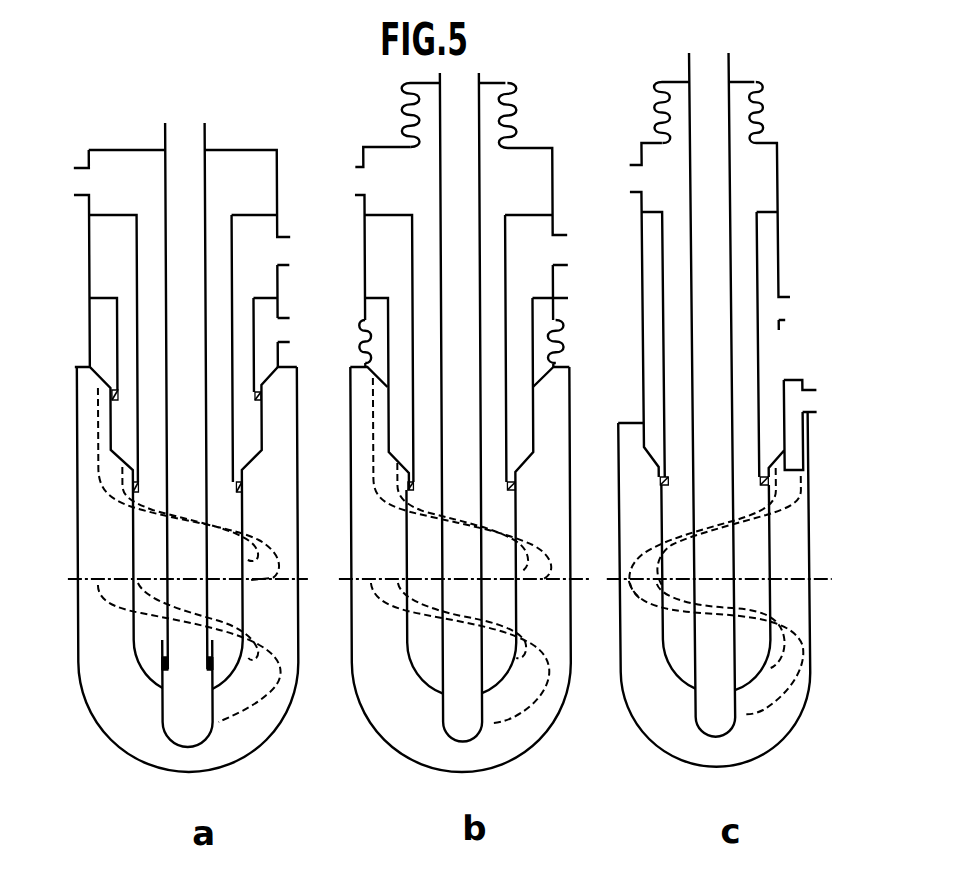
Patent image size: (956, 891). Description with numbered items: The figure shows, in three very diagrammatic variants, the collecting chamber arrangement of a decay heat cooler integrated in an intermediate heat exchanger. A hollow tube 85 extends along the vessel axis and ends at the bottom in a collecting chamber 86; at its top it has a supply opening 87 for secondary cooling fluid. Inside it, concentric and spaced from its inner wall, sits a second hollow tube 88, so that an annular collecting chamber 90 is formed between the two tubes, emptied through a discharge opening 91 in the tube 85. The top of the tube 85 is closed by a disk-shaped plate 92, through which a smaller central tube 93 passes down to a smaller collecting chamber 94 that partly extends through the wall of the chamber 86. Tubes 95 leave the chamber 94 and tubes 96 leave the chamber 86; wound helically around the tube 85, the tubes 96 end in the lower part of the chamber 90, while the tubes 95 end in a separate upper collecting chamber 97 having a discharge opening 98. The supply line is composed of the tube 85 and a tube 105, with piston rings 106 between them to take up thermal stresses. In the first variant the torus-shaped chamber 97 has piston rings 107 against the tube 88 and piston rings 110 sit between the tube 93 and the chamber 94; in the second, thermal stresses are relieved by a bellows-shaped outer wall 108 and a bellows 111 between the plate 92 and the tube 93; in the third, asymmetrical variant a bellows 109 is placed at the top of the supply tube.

The hollow tube 85 is at (138, 285).
The collecting chamber 86 is at (157, 668).
The supply opening 87 is at (85, 182).
The second hollow tube 88 is at (118, 318).
The collecting chamber 90 is at (255, 228).
The discharge opening 91 is at (283, 252).
The disk-shaped plate 92 is at (257, 150).
The tube 93 is at (205, 168).
The collecting chamber 94 is at (203, 732).
The tubes 95 is at (237, 712).
The tubes 96 is at (252, 658).
The collecting chamber 97 is at (100, 348).
The discharge opening 98 is at (285, 327).
The tube 105 is at (242, 617).
The piston rings 106 is at (242, 487).
The piston rings 107 is at (260, 396).
The bellows-shaped outer wall 108 is at (567, 347).
The bellows 109 is at (659, 118).
The piston rings 110 is at (217, 690).
The bellows 111 is at (403, 115).